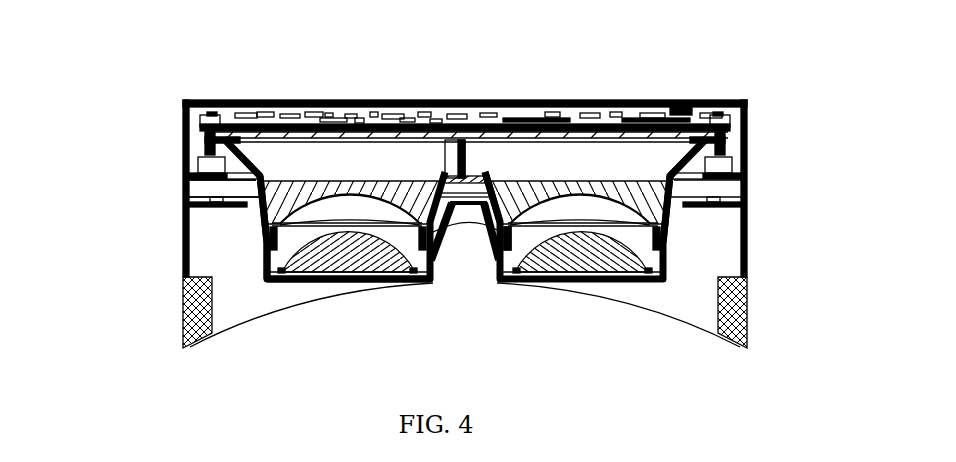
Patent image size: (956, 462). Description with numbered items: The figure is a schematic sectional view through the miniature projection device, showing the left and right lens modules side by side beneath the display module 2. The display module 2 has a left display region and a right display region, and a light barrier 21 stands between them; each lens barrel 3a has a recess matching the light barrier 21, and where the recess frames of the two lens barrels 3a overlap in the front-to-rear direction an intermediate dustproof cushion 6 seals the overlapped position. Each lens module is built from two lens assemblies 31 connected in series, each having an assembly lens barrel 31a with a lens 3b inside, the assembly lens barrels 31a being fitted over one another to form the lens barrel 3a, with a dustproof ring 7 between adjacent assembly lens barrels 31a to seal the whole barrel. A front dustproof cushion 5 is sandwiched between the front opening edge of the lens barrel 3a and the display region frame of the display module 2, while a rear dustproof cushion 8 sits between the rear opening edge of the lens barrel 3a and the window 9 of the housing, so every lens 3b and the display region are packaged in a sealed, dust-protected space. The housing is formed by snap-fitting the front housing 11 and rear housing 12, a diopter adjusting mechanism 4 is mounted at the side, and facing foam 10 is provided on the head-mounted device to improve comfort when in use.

The display module 2 is at (310, 135).
The front dustproof cushion 5 is at (253, 140).
The light barrier 21 is at (467, 157).
The front housing 11 is at (187, 177).
The lens 3b is at (287, 198).
The lens barrel 3a is at (265, 274).
The diopter adjusting mechanism 4 is at (723, 147).
The lens assembly 31 is at (661, 258).
The assembly lens barrel 31a is at (492, 230).
The intermediate dustproof cushion 6 is at (468, 180).
The dustproof ring 7 is at (513, 243).
The rear dustproof cushion 8 is at (413, 275).
The window 9 is at (597, 272).
The facing foam 10 is at (182, 306).
The rear housing 12 is at (257, 244).